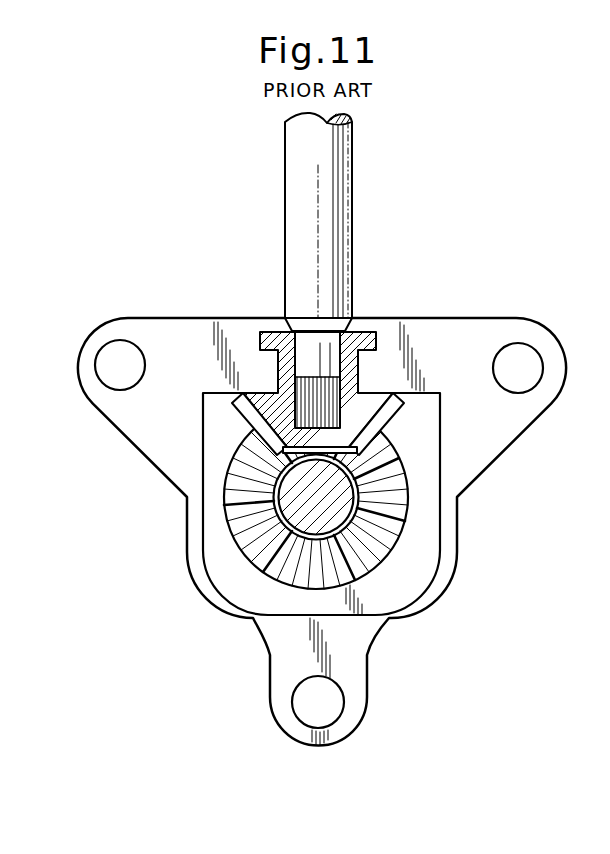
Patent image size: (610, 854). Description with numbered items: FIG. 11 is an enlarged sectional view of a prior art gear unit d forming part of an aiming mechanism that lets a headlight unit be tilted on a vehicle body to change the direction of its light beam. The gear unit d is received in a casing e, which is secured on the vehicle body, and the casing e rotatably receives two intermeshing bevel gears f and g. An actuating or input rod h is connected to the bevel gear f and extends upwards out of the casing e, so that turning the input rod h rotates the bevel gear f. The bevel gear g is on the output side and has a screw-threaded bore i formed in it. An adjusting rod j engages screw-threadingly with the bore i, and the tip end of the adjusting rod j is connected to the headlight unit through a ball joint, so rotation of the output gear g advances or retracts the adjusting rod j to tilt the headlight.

The gear unit d is at (522, 169).
The casing e is at (458, 513).
The bevel gear f is at (406, 413).
The bevel gear g is at (405, 530).
The actuating or input rod h is at (343, 198).
The screw-threaded bore i is at (291, 509).
The adjusting rod j is at (279, 493).